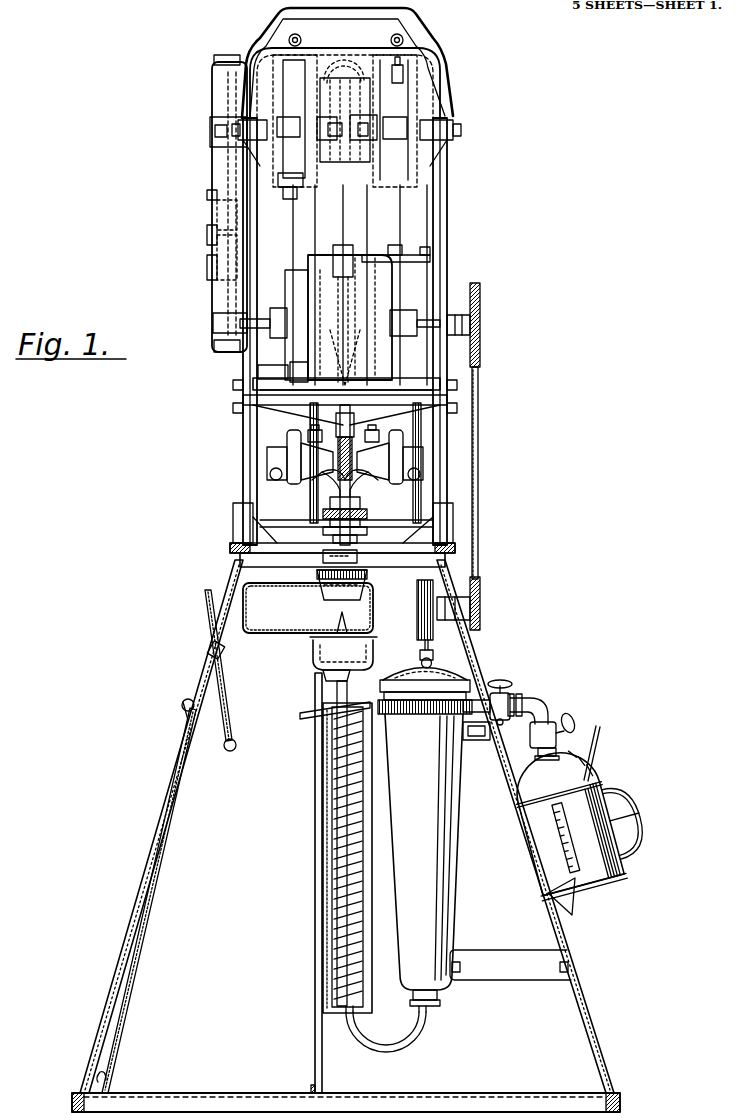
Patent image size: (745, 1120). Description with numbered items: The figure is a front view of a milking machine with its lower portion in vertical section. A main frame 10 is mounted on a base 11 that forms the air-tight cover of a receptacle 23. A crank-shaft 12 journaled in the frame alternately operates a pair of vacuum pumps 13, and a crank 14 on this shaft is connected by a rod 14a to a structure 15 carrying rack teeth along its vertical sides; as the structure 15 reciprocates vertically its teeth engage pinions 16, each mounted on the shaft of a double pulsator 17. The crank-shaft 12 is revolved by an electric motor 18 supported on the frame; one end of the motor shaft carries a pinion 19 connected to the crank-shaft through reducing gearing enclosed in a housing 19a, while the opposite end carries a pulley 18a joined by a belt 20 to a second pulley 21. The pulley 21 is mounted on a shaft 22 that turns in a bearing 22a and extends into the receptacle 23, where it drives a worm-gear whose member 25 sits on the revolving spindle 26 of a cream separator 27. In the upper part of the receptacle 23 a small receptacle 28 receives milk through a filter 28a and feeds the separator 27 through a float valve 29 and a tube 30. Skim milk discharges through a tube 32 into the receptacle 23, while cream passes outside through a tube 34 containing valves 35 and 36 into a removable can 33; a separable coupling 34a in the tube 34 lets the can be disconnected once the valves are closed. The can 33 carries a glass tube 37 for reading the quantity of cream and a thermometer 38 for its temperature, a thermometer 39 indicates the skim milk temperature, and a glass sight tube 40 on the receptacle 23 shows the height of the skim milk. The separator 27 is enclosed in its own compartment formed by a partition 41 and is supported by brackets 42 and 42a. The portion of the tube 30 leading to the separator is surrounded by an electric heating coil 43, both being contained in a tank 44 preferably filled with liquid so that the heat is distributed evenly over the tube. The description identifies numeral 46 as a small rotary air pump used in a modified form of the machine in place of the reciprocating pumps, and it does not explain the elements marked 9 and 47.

The base plate 9 is at (452, 555).
The main frame 10 is at (447, 238).
The base 11 is at (232, 548).
The crank-shaft 12 is at (295, 127).
The vacuum pump 13 is at (277, 432).
The crank 14 is at (367, 121).
The rod 14a is at (347, 218).
The rack structure 15 is at (351, 413).
The pinion 16 is at (318, 480).
The double pulsator 17 is at (369, 490).
The electric motor 18 is at (377, 287).
The pulley 18a is at (481, 352).
The pinion 19 is at (233, 333).
The housing 19a is at (214, 185).
The belt 20 is at (480, 462).
The second pulley 21 is at (419, 587).
The shaft 22 is at (447, 687).
The bearing 22a is at (429, 603).
The receptacle 23 is at (100, 1033).
The worm-gear member 25 is at (427, 620).
The revolving spindle 26 is at (433, 648).
The cream separator 27 is at (450, 897).
The small receptacle 28 is at (253, 590).
The filter 28a is at (320, 620).
The float valve 29 is at (347, 653).
The tube 30 is at (333, 685).
The tube 32 is at (307, 711).
The removable can 33 is at (590, 797).
The tube 34 is at (452, 716).
The separable coupling 34a is at (523, 697).
The valve 35 is at (503, 682).
The valve 36 is at (567, 717).
The glass tube 37 is at (578, 833).
The thermometer 38 is at (590, 738).
The thermometer 39 is at (215, 624).
The glass sight tube 40 is at (128, 907).
The partition 41 is at (317, 1050).
The bracket 42 is at (477, 741).
The bracket 42a is at (480, 967).
The electric heating coil 43 is at (333, 887).
The tank 44 is at (372, 850).
The rotary air pump 46 is at (415, 31).
The hood 47 is at (345, 2).